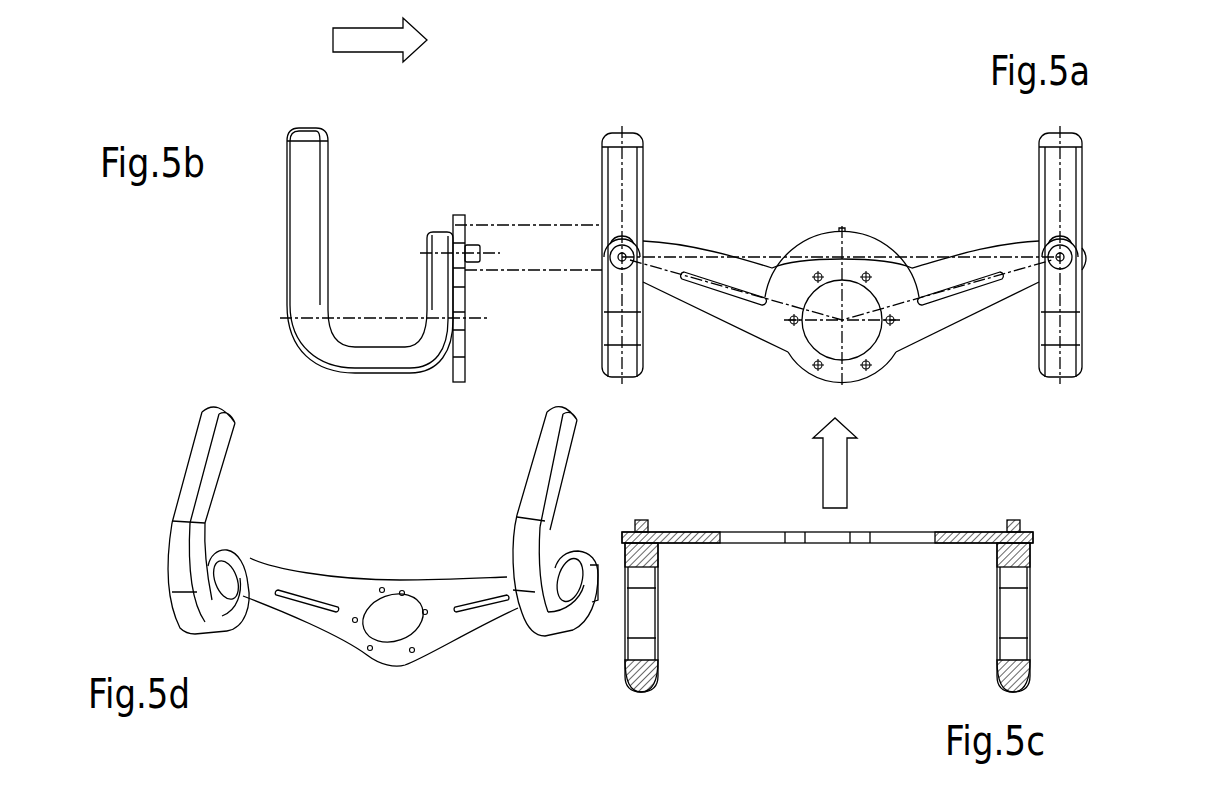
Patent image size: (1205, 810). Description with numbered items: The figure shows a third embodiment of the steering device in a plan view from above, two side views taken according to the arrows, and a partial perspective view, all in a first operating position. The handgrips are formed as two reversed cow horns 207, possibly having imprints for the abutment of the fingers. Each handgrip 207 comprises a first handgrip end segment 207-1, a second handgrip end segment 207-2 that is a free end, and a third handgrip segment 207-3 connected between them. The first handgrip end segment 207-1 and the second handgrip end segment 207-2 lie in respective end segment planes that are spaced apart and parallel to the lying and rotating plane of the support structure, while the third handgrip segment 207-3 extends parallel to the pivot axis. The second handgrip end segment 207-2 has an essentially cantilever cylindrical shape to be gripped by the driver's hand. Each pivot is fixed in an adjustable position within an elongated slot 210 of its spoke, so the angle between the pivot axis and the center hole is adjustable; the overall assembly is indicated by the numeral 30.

In FIG. 5A, the front suspension assembly 30 is at (793, 152).
In FIG. 5C, the front suspension assembly 30 is at (425, 707).
In FIG. 5A, the handgrip 207 is at (1058, 325).
In FIG. 5B, the handgrip 207 is at (303, 192).
In FIG. 5C, the handgrip 207 is at (1038, 533).
In FIG. 5D, the handgrip 207 is at (220, 427).
In FIG. 5B, the first handgrip end segment 207-1 is at (437, 285).
In FIG. 5D, the first handgrip end segment 207-1 is at (580, 525).
In FIG. 5B, the second handgrip end segment 207-2 is at (310, 210).
In FIG. 5D, the second handgrip end segment 207-2 is at (198, 478).
In FIG. 5B, the third handgrip segment 207-3 is at (346, 366).
In FIG. 5D, the third handgrip segment 207-3 is at (190, 613).
In FIG. 5A, the slot 210 is at (600, 228).
In FIG. 5B, the slot 210 is at (453, 215).